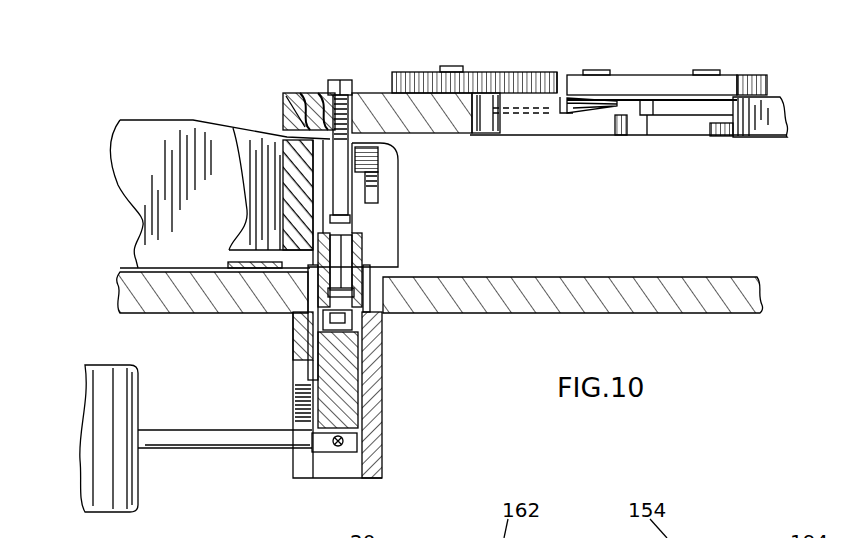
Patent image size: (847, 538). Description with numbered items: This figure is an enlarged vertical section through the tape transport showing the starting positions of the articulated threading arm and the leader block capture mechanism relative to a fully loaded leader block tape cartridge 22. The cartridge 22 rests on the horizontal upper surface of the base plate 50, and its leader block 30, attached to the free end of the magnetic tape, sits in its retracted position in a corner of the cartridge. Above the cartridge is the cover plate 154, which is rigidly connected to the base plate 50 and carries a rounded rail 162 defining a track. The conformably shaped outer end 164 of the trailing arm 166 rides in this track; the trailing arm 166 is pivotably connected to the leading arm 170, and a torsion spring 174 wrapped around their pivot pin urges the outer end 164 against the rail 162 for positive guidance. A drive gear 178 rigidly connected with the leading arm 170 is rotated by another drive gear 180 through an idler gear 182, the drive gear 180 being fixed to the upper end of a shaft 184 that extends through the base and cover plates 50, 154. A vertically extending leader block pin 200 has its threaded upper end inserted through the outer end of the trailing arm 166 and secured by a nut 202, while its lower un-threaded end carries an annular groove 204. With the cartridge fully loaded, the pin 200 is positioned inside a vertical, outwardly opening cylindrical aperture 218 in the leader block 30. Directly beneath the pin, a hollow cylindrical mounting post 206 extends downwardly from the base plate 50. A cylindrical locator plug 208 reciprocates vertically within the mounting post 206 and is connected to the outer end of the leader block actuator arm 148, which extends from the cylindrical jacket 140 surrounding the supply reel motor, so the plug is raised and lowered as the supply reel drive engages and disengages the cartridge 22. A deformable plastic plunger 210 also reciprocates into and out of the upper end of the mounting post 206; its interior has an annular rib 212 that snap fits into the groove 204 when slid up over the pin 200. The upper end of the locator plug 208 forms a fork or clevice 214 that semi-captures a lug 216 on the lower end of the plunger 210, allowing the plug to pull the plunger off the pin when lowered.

The leader block tape cartridge 22 is at (177, 123).
The leader block 30 is at (248, 197).
The base plate 50 is at (645, 283).
The cylindrical jacket 140 is at (128, 457).
The leader block actuator arm 148 is at (250, 437).
The cover plate 154 is at (753, 134).
The rounded rail 162 is at (283, 107).
The outer end of the trailing arm 164 is at (290, 88).
The trailing arm 166 is at (487, 128).
The leading arm 170 is at (630, 81).
The torsion spring 174 is at (598, 113).
The drive gear 178 is at (770, 85).
The drive gear 180 is at (417, 80).
The idler gear 182 is at (535, 78).
The shaft 184 is at (462, 68).
The leader block pin 200 is at (373, 162).
The nut 202 is at (368, 64).
The annular groove 204 is at (350, 215).
The mounting post 206 is at (377, 440).
The locator plug 208 is at (352, 382).
The plunger 210 is at (360, 250).
The annular rib 212 is at (360, 270).
The clevice 214 is at (360, 315).
The lug 216 is at (360, 334).
The cylindrical aperture 218 is at (352, 198).